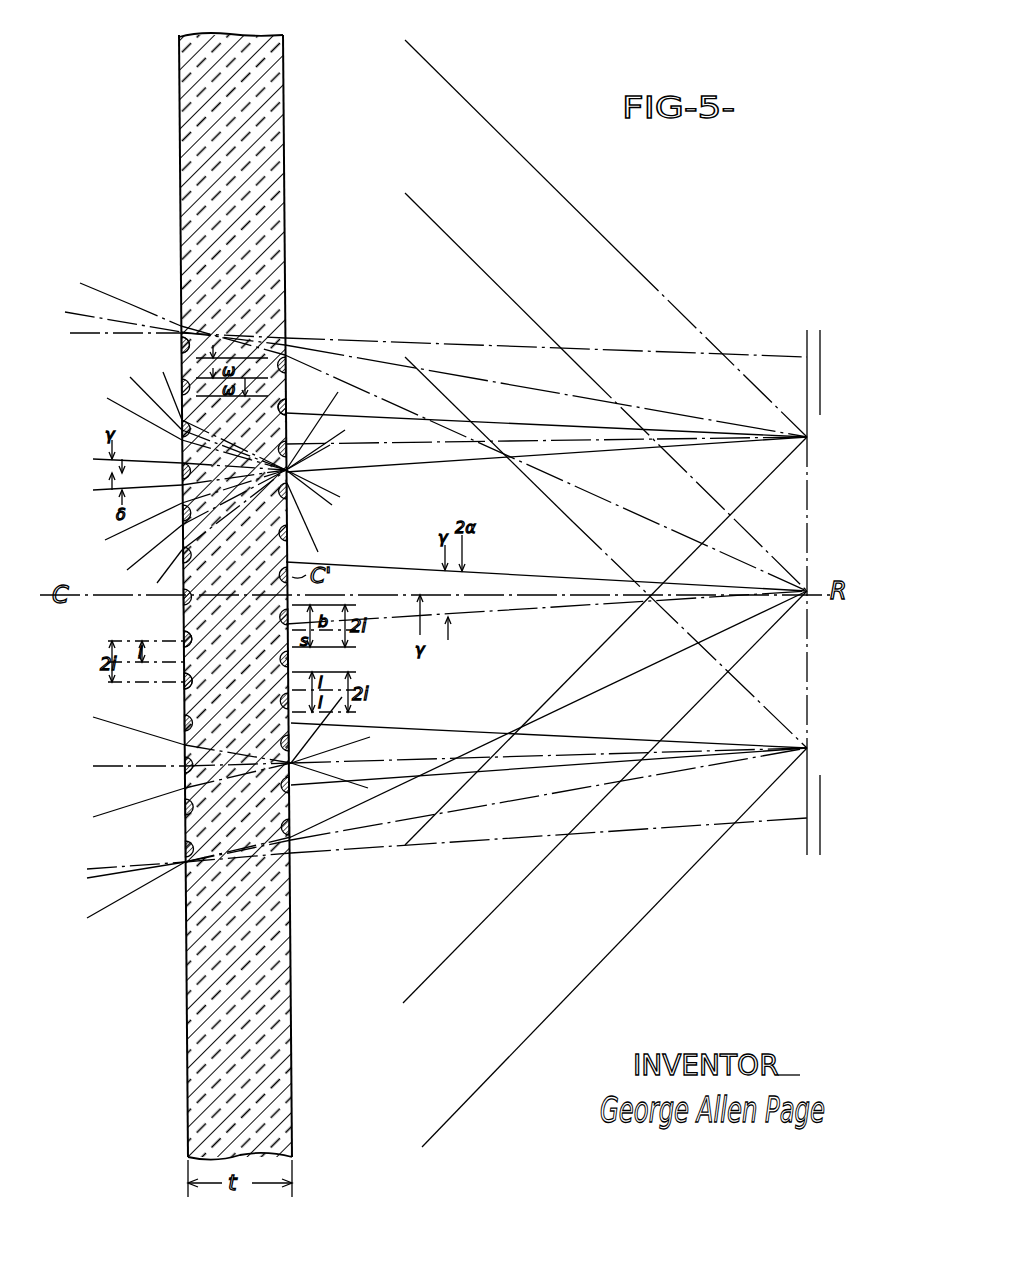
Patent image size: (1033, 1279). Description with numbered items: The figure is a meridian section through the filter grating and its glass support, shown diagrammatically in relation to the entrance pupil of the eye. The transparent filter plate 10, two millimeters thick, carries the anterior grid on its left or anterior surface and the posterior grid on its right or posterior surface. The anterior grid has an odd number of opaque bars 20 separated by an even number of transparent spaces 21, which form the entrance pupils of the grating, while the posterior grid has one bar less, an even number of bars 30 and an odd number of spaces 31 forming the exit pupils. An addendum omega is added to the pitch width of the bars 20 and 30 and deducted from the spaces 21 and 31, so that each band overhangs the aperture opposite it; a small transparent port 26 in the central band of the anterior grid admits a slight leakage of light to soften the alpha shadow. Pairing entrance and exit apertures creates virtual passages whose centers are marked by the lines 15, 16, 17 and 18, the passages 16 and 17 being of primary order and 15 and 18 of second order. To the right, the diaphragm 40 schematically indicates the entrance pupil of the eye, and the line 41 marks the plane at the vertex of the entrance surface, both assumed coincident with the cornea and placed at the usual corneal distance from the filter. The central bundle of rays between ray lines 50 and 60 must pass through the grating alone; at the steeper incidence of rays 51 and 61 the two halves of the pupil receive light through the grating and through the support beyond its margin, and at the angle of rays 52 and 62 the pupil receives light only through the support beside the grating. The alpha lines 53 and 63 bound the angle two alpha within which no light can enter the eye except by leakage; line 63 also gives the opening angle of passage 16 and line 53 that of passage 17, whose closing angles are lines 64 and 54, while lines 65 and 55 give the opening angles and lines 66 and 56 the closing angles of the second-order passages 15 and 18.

The filter plate 10 is at (190, 1035).
The passage center line 15 is at (184, 684).
The passage center line 16 is at (142, 737).
The passage center line 17 is at (128, 800).
The passage center line 18 is at (175, 858).
The anterior grid bars 20 is at (184, 726).
The anterior grid spaces 21 is at (180, 345).
The transparent port 26 is at (184, 636).
The posterior grid bars 30 is at (288, 533).
The posterior grid spaces 31 is at (287, 392).
The diaphragm 40 is at (808, 437).
The plane line 41 is at (812, 680).
The ray line 50 is at (90, 878).
The ray line 51 is at (636, 672).
The ray line 52 is at (572, 663).
The alpha line 53 is at (100, 492).
The closing angle line 54 is at (110, 542).
The opening angle line 55 is at (132, 572).
The closing angle line 56 is at (160, 575).
The ray line 60 is at (80, 315).
The ray line 61 is at (96, 290).
The ray line 62 is at (505, 145).
The alpha line 63 is at (95, 333).
The closing angle line 64 is at (108, 392).
The opening angle line 65 is at (134, 376).
The closing angle line 66 is at (170, 380).